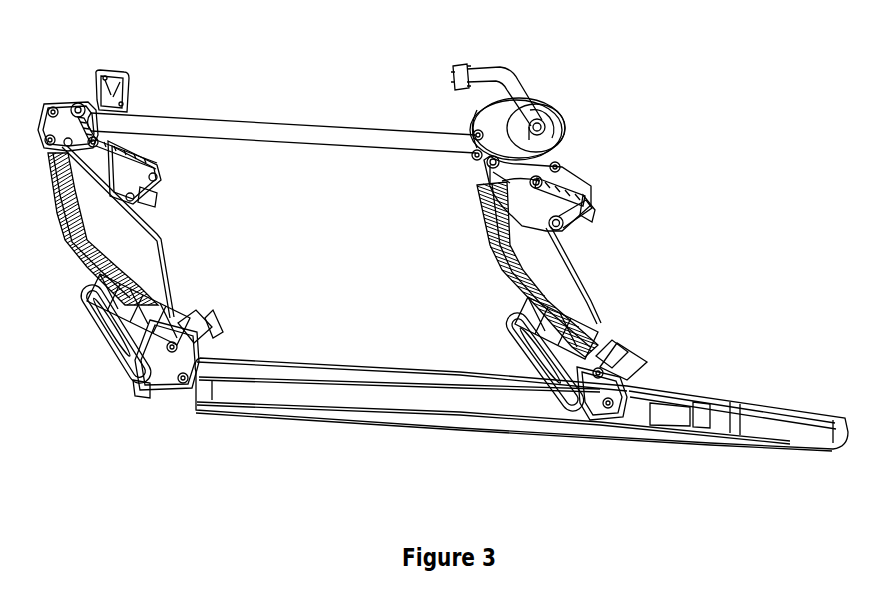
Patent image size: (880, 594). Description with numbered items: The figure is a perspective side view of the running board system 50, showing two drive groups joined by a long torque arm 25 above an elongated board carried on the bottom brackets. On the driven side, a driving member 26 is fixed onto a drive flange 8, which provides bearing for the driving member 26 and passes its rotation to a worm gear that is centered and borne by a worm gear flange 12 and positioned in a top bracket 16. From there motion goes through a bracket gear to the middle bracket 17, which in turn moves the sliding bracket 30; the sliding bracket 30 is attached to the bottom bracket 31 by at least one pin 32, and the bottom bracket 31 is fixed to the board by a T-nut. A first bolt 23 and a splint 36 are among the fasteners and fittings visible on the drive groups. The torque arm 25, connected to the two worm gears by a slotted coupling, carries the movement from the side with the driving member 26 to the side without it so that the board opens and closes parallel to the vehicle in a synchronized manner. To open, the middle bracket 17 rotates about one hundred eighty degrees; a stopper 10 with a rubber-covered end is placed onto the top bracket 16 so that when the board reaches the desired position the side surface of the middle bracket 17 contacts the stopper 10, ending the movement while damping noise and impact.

The running board system 50 is at (780, 63).
The worm gear flange 12 is at (93, 103).
The torque arm 25 is at (282, 140).
The stopper 10 is at (495, 181).
The driving member 26 is at (508, 110).
The drive flange 8 is at (525, 167).
The top bracket 16 is at (563, 178).
The first bolt 23 is at (575, 219).
The middle bracket 17 is at (567, 265).
The sliding bracket 30 is at (557, 335).
The splint 36 is at (633, 360).
The pin 32 is at (597, 373).
The bottom bracket 31 is at (212, 383).